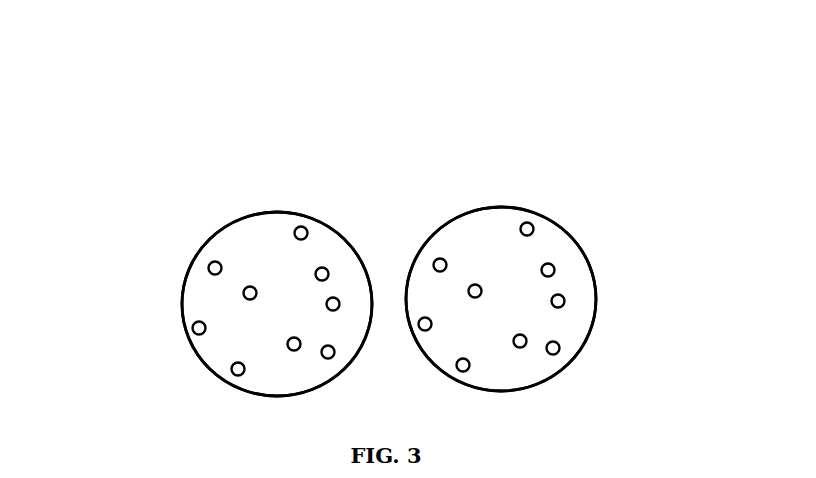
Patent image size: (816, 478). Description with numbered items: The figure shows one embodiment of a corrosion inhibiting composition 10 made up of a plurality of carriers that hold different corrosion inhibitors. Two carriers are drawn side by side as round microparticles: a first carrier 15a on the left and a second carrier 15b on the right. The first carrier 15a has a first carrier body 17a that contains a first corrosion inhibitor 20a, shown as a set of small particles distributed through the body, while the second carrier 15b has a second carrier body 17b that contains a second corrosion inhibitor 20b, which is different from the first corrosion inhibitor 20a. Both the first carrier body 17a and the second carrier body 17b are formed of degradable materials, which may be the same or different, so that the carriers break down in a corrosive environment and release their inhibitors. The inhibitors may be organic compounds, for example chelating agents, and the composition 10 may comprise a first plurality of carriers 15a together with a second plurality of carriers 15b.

The corrosion inhibiting composition 10 is at (272, 154).
The first carrier 15a is at (184, 244).
The second carrier 15b is at (578, 234).
The first carrier body 17a is at (197, 293).
The second carrier body 17b is at (565, 333).
The first corrosion inhibitor 20a is at (193, 329).
The second corrosion inhibitor 20b is at (565, 299).